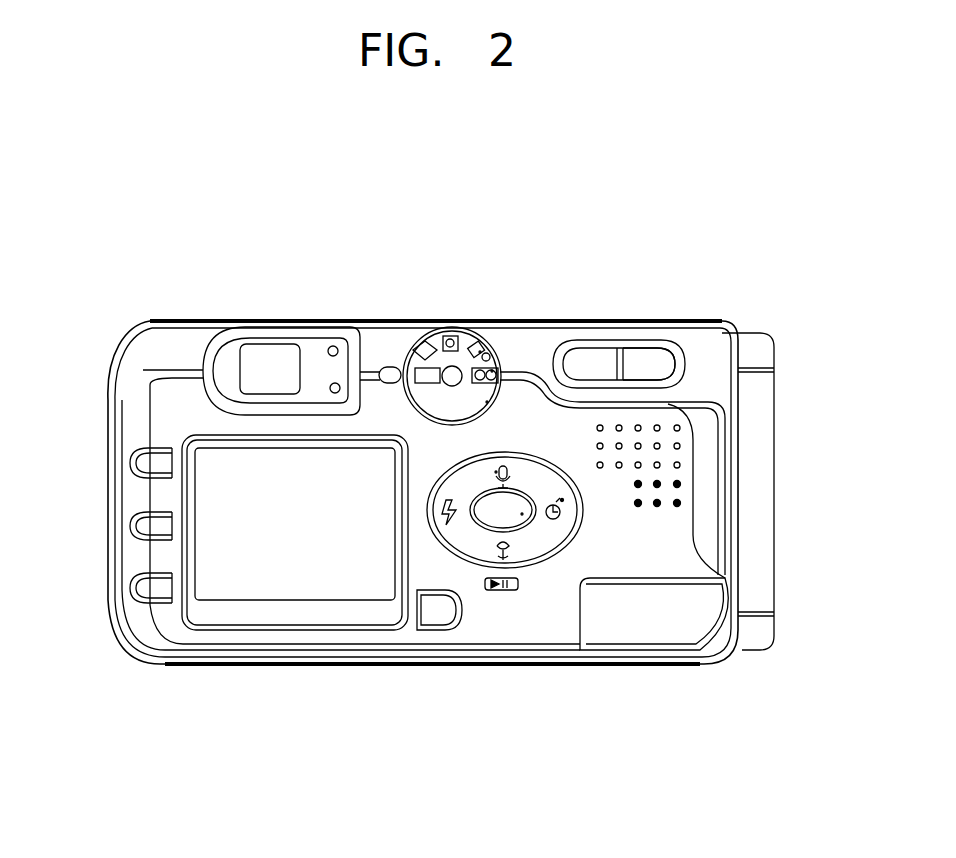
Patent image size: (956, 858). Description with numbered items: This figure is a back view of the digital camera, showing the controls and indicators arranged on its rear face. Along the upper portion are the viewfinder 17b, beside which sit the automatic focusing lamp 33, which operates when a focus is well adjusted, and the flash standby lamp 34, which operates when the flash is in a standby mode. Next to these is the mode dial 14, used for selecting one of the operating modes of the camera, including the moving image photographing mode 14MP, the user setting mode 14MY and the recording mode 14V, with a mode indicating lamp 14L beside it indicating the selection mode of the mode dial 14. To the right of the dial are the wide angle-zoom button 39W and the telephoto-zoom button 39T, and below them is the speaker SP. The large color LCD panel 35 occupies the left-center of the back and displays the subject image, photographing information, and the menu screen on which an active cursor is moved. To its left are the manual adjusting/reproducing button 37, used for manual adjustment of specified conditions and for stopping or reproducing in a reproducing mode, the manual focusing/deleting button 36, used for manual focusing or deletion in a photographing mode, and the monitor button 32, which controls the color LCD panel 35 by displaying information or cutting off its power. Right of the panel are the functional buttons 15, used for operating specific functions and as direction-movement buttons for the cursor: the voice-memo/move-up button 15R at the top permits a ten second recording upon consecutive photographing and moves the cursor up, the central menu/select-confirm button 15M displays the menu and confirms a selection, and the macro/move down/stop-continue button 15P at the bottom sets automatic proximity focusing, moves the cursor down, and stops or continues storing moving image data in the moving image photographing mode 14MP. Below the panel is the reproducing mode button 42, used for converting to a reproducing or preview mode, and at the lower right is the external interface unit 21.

The viewfinder 17b is at (270, 352).
The automatic focusing lamp 33 is at (333, 346).
The flash standby lamp 34 is at (340, 385).
The mode indicating lamp 14L is at (392, 372).
The mode dial 14 is at (460, 328).
The moving image photographing mode 14MP is at (482, 352).
The recording mode 14V is at (492, 370).
The user setting mode 14MY is at (487, 402).
The wide angle-zoom button 39W is at (597, 365).
The telephoto-zoom button 39T is at (645, 365).
The speaker SP is at (680, 484).
The manual adjusting/reproducing button 37 is at (138, 464).
The manual focusing/deleting button 36 is at (138, 527).
The monitor button 32 is at (138, 590).
The color LCD panel 35 is at (288, 580).
The reproducing mode button 42 is at (433, 630).
The functional buttons 15 is at (480, 578).
The voice-memo/move-up button 15R is at (496, 472).
The menu/select-confirm button 15M is at (522, 514).
The macro/move down/stop-continue button 15P is at (513, 548).
The external interface unit 21 is at (690, 628).